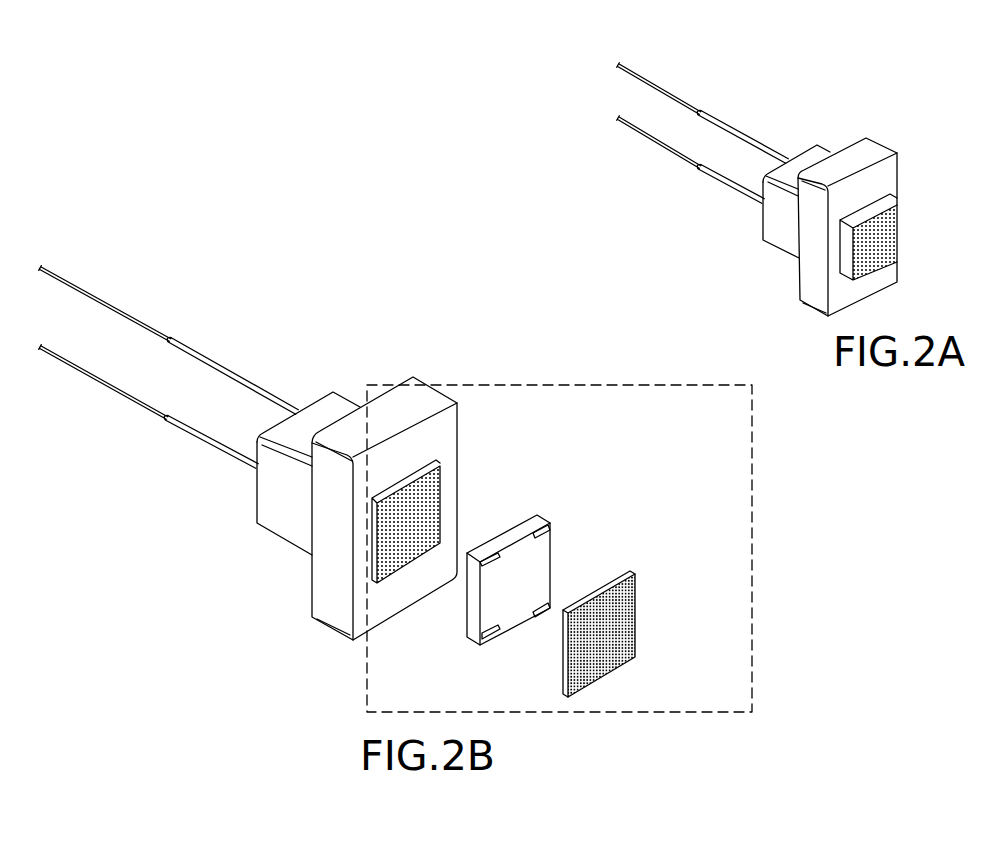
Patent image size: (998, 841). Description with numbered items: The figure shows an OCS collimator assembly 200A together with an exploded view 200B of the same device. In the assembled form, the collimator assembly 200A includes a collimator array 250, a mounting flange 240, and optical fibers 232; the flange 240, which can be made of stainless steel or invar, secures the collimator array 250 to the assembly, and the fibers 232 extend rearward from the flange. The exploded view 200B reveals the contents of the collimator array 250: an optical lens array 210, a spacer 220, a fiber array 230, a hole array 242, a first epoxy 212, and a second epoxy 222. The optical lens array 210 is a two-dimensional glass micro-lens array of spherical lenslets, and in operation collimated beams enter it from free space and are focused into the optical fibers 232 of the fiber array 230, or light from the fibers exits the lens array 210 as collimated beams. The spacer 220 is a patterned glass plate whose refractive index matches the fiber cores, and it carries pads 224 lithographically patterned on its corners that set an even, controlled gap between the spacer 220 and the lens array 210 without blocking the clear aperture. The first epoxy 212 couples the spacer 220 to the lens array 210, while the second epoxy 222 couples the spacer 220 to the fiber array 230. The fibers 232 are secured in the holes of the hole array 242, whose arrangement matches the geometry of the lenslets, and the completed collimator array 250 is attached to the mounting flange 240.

In FIG. 2A, the OCS collimator assembly 200A is at (602, 90).
In FIG. 2B, the exploded view 200B is at (77, 250).
In FIG. 2A, the optical fibers 232 is at (686, 150).
In FIG. 2A, the mounting flange 240 is at (792, 268).
In FIG. 2A, the collimator array 250 is at (914, 169).
In FIG. 2B, the collimator array 250 is at (735, 701).
In FIG. 2B, the hole array 242 is at (377, 574).
In FIG. 2B, the fiber array 230 is at (440, 477).
In FIG. 2B, the second epoxy 222 is at (491, 516).
In FIG. 2B, the spacer 220 is at (546, 518).
In FIG. 2B, the pads 224 is at (488, 562).
In FIG. 2B, the first epoxy 212 is at (596, 574).
In FIG. 2B, the optical lens array 210 is at (632, 578).